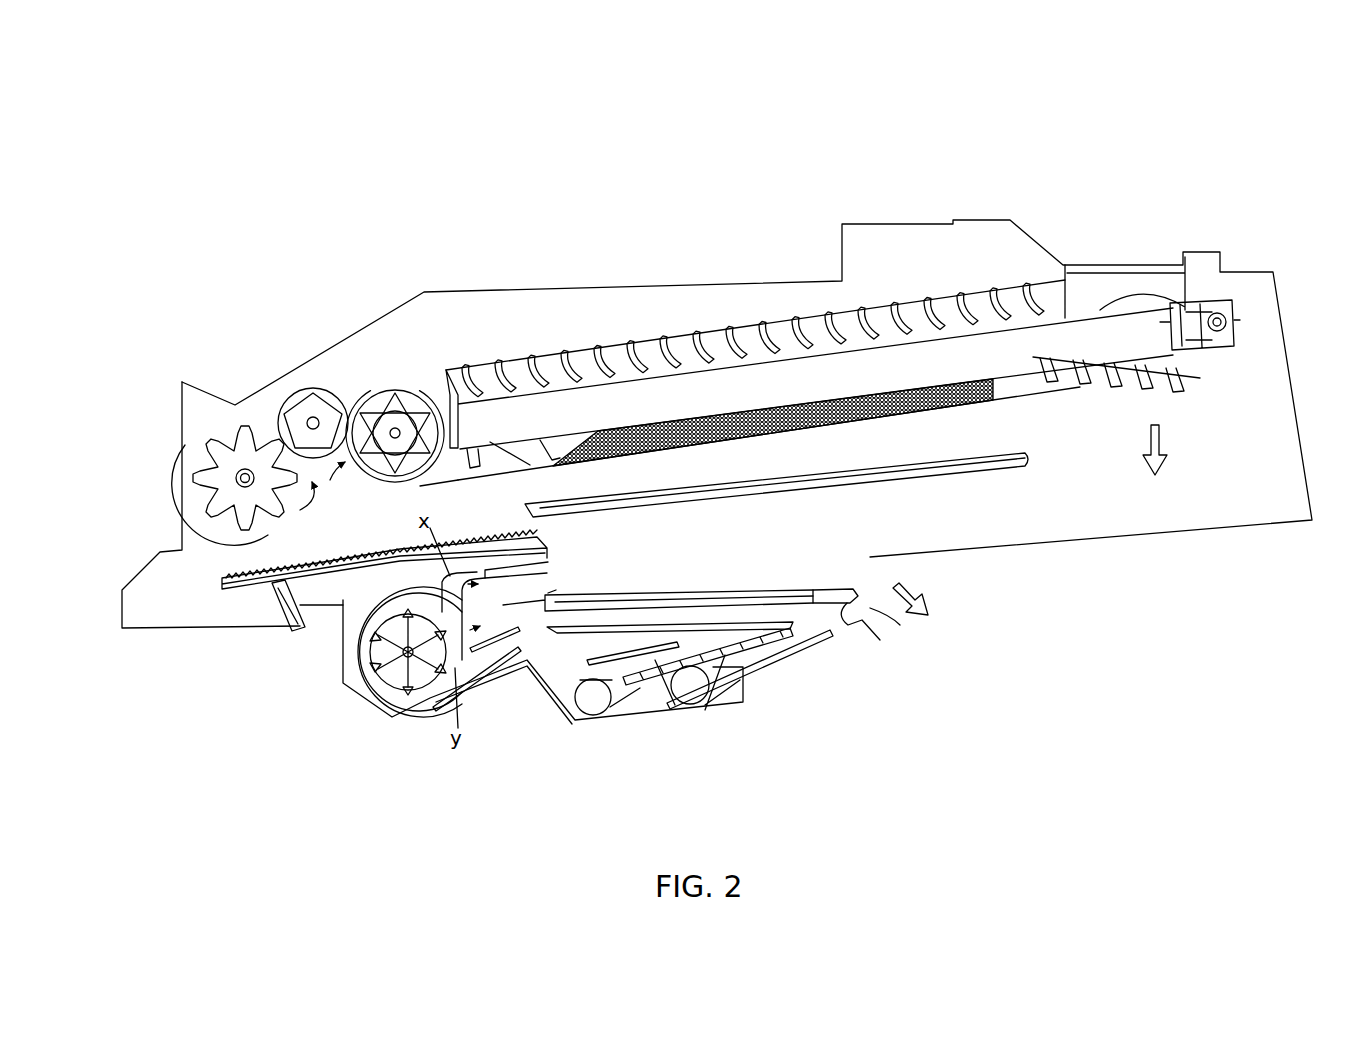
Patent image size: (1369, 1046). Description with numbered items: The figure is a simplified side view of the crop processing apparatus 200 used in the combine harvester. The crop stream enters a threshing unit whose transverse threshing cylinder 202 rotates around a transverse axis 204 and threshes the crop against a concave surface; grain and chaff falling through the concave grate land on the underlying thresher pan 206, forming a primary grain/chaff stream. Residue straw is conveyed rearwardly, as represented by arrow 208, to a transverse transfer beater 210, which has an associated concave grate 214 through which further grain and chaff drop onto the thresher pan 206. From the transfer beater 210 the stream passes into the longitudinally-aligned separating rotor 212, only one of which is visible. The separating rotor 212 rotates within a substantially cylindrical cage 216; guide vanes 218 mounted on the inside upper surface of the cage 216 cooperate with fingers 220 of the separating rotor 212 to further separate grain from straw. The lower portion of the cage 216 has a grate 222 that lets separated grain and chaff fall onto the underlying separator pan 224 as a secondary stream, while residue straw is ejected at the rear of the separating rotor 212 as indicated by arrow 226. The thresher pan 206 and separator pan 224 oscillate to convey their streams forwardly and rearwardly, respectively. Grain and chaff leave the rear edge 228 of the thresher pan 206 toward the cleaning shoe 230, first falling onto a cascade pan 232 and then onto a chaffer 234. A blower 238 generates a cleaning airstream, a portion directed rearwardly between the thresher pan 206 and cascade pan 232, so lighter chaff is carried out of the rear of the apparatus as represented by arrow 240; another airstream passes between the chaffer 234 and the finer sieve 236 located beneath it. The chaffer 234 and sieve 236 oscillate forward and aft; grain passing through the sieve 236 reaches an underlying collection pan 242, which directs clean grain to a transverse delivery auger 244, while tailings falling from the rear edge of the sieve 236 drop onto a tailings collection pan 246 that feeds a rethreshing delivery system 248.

The crop processing apparatus 200 is at (338, 196).
The threshing cylinder 202 is at (222, 466).
The transverse axis 204 is at (240, 466).
The thresher pan 206 is at (332, 565).
The arrow 208 is at (305, 497).
The transfer beater 210 is at (380, 400).
The separating rotor 212 is at (547, 422).
The concave grate 214 is at (373, 493).
The cylindrical cage 216 is at (673, 333).
The guide vanes 218 is at (782, 320).
The fingers 220 is at (960, 310).
The grate 222 is at (973, 403).
The separator pan 224 is at (890, 482).
The arrow 226 is at (1160, 440).
The rear edge 228 is at (553, 547).
The cleaning shoe 230 is at (507, 722).
The cascade pan 232 is at (582, 567).
The chaffer 234 is at (827, 595).
The sieve 236 is at (737, 623).
The blower 238 is at (397, 677).
The arrow 240 is at (903, 600).
The collection pan 242 is at (773, 643).
The delivery auger 244 is at (593, 715).
The tailings collection pan 246 is at (820, 640).
The rethreshing delivery system 248 is at (690, 704).